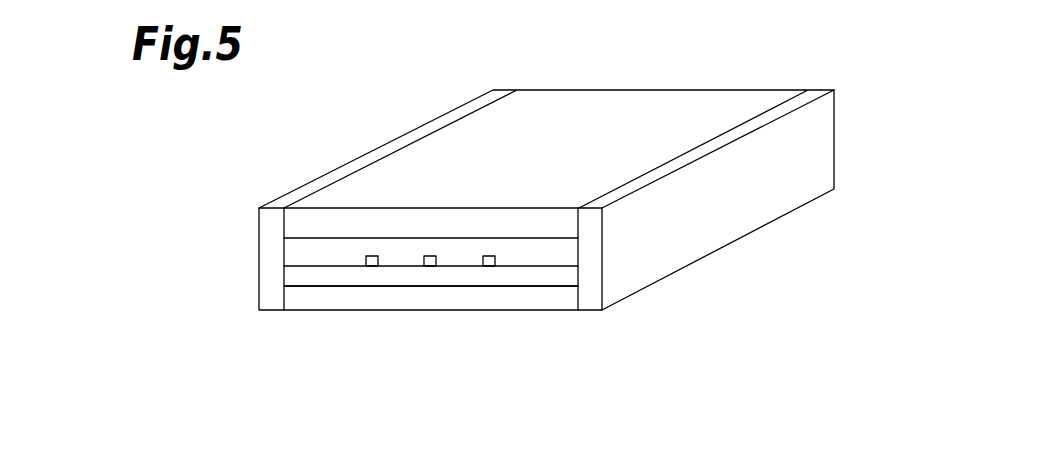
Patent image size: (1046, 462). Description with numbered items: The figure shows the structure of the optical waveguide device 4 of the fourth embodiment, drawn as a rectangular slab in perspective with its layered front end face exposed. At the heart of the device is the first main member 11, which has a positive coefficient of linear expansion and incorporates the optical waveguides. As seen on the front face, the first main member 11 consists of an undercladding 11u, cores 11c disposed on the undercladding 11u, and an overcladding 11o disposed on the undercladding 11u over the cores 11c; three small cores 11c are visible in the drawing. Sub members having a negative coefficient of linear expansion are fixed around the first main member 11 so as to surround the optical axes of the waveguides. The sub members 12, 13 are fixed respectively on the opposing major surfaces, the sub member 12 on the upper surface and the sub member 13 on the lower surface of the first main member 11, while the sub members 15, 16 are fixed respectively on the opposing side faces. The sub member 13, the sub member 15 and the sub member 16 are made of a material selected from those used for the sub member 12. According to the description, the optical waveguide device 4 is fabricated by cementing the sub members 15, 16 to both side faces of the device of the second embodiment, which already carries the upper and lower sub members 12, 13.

The optical waveguide device 4 is at (714, 71).
The first main member 11 is at (439, 354).
The cores 11c is at (420, 306).
The undercladding 11u is at (530, 277).
The overcladding 11o is at (560, 257).
The sub member 12 is at (316, 219).
The sub member 13 is at (303, 300).
The sub member 15 is at (273, 259).
The sub member 16 is at (588, 280).